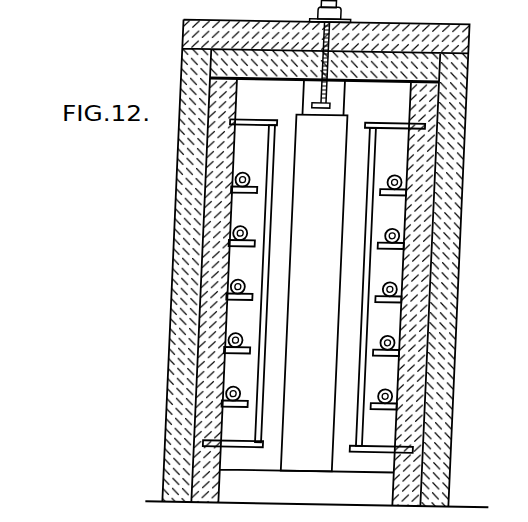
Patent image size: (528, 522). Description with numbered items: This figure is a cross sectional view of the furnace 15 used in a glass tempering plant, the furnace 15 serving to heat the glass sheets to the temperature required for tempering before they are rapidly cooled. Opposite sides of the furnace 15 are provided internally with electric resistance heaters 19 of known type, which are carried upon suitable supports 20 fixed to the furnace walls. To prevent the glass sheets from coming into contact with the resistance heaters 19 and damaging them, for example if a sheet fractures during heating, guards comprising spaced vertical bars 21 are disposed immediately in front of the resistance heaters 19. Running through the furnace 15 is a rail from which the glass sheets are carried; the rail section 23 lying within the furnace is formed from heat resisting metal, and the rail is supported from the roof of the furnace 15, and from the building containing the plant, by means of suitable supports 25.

The furnace 15 is at (314, 293).
The electric resistance heater 19 is at (248, 174).
The support 20 is at (256, 295).
The vertical bar 21 is at (378, 156).
The rail section 23 is at (315, 117).
The support 25 is at (322, 85).